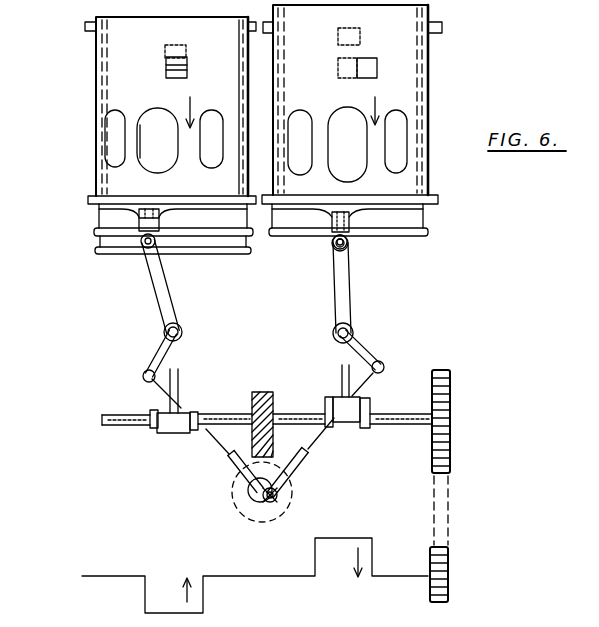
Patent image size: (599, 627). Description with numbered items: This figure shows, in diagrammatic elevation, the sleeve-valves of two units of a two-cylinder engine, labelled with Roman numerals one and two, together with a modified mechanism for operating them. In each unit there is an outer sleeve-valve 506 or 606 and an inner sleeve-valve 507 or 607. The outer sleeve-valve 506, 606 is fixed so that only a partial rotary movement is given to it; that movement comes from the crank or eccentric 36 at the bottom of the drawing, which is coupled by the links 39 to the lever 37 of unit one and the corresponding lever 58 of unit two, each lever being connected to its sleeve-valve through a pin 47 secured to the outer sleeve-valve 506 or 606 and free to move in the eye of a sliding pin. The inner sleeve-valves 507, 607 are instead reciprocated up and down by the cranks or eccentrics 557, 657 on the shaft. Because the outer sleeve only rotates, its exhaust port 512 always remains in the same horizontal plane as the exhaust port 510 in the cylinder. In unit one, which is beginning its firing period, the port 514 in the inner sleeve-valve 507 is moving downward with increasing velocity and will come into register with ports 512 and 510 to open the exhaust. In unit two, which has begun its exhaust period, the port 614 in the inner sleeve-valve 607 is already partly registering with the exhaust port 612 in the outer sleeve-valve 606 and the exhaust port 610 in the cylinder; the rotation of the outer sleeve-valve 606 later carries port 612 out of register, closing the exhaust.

The outer sleeve-valve 606 is at (95, 97).
The inner sleeve-valve 607 is at (97, 214).
The pin 47 is at (150, 222).
The left connecting rod 58 is at (163, 305).
The port 614 is at (166, 53).
The exhaust port 612 is at (166, 72).
The exhaust port 610 is at (187, 70).
The outer sleeve-valve 506 is at (432, 82).
The inner sleeve-valve 507 is at (424, 219).
The port 514 is at (338, 36).
The exhaust port 512 is at (368, 59).
The exhaust port 510 is at (338, 67).
The lever 37 is at (352, 307).
The crank or eccentric 557 is at (367, 400).
The crank or eccentric 657 is at (150, 429).
The link 39 is at (230, 462).
The crank or eccentric 36 is at (256, 488).